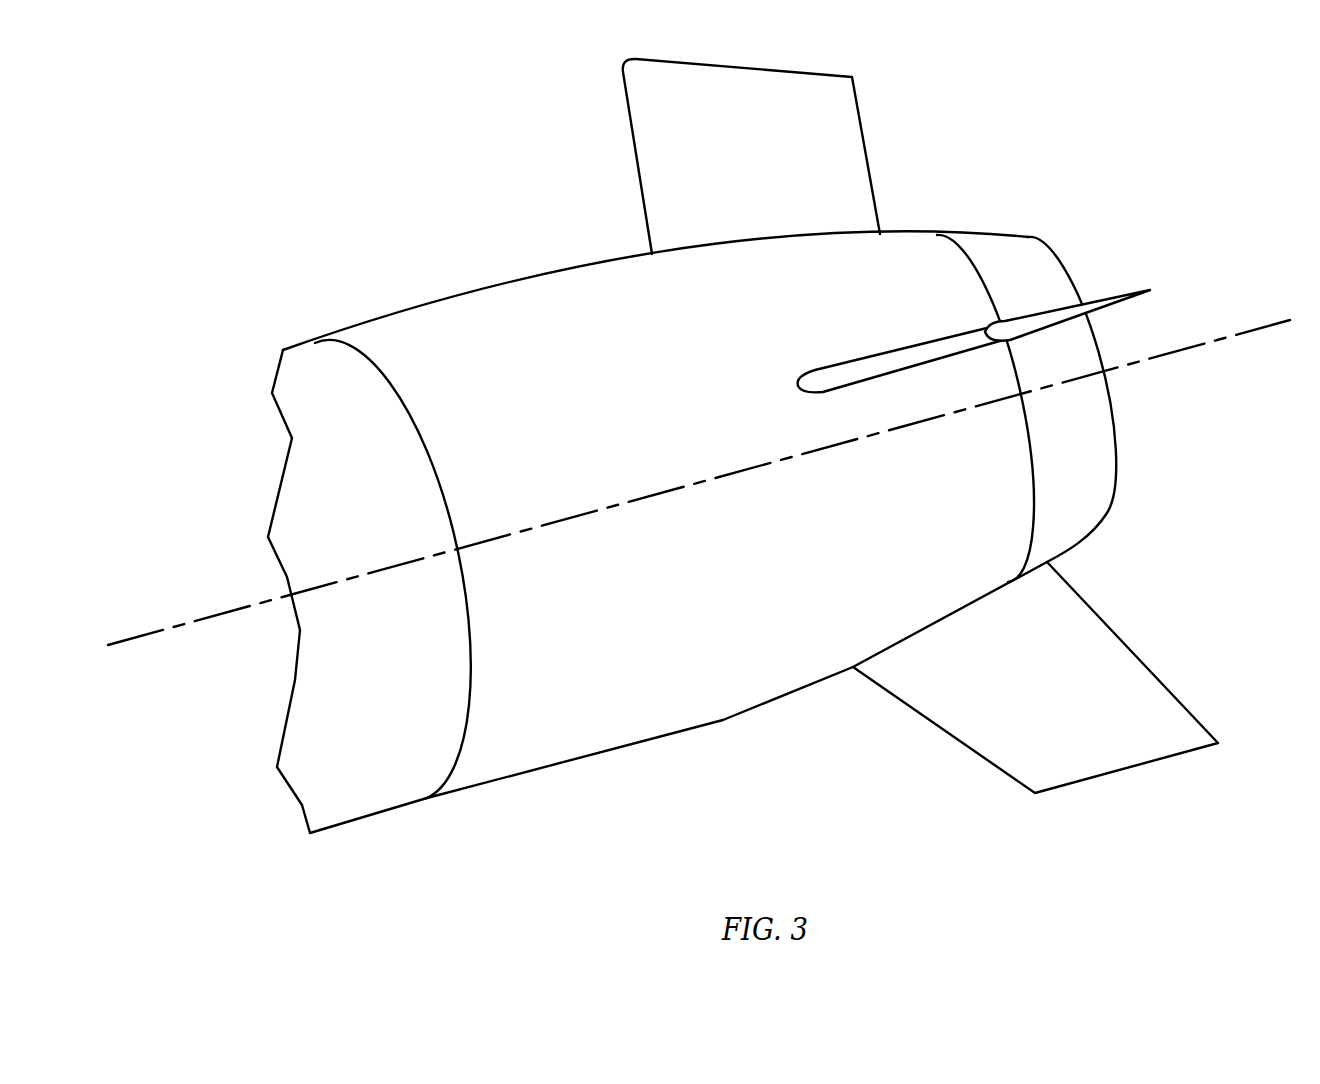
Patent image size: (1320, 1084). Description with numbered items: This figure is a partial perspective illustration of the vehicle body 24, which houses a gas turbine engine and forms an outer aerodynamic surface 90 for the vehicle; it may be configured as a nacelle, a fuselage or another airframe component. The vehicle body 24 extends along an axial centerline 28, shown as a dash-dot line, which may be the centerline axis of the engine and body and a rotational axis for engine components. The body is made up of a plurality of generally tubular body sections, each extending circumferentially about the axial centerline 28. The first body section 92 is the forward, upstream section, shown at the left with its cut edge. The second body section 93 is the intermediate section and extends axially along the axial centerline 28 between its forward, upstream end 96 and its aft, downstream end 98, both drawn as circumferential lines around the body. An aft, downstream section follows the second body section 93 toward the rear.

The vehicle body 24 is at (699, 496).
The axial centerline 28 is at (1277, 325).
The outer aerodynamic surface 90 is at (313, 360).
The first body section 92 is at (382, 832).
The second body section 93 is at (605, 770).
The forward, upstream end 96 is at (462, 616).
The aft, downstream end 98 is at (1036, 474).